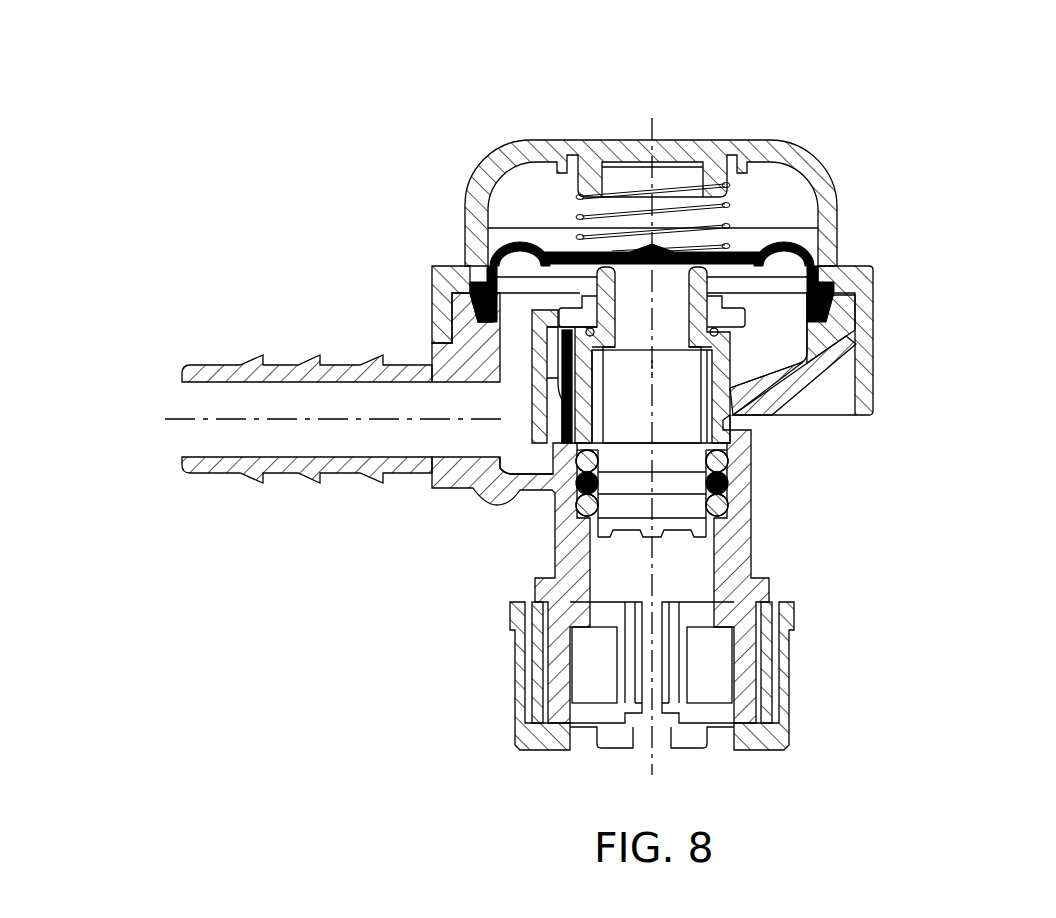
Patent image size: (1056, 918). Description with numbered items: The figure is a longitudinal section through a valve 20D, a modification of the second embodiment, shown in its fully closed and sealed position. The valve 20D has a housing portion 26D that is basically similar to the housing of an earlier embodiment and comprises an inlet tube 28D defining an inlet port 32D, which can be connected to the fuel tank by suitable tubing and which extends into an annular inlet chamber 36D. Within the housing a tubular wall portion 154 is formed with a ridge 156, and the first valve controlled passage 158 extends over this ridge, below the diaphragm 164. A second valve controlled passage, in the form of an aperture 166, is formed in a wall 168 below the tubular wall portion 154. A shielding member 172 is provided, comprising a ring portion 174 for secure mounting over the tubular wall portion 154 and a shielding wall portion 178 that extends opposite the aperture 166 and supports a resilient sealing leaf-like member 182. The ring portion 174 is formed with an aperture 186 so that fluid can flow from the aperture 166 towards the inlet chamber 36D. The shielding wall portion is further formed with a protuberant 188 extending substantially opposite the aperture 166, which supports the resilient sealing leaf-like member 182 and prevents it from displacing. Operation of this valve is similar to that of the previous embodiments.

The valve 20D is at (410, 596).
The housing portion 26D is at (865, 373).
The inlet tube 28D is at (222, 373).
The inlet port 32D is at (222, 408).
The annular inlet chamber 36D is at (518, 425).
The tubular wall portion 154 is at (697, 300).
The ridge 156 is at (675, 305).
The first valve controlled passage 158 is at (638, 292).
The diaphragm 164 is at (553, 250).
The aperture 166 is at (553, 553).
The wall 168 is at (688, 384).
The shielding member 172 is at (553, 380).
The ring portion 174 is at (722, 317).
The shielding wall portion 178 is at (538, 393).
The resilient sealing leaf-like member 182 is at (728, 484).
The aperture 186 is at (550, 317).
The protuberant 188 is at (553, 400).